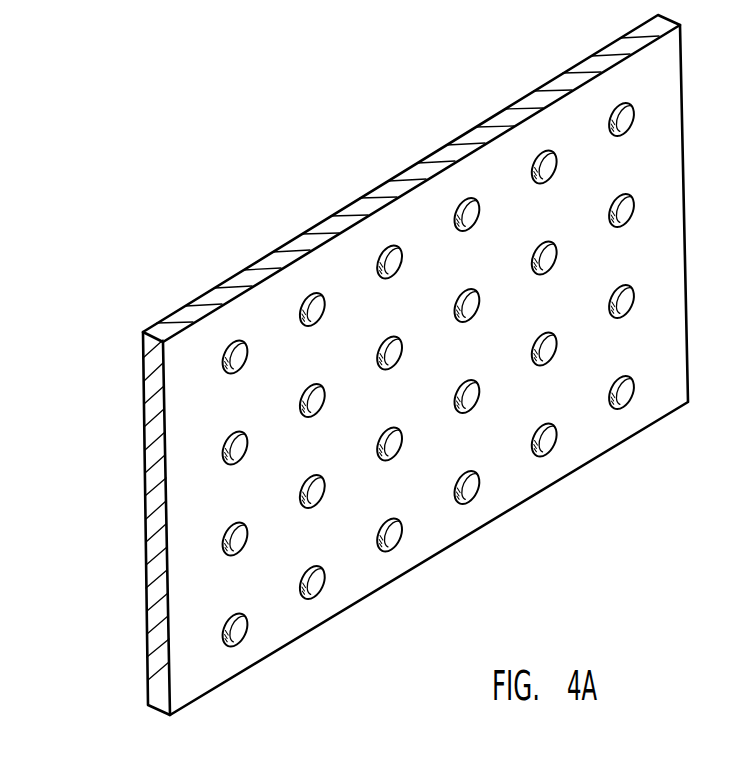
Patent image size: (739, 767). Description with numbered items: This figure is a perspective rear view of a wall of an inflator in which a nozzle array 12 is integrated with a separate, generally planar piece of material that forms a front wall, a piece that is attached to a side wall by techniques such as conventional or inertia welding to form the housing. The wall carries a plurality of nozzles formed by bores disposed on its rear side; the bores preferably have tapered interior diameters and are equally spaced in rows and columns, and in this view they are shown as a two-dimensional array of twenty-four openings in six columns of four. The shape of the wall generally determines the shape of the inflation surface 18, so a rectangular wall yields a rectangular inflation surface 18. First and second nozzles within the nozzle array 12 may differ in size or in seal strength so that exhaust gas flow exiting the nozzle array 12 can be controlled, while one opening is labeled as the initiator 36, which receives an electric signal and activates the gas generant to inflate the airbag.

The nozzle array 12 is at (203, 347).
The inflation surface 18 is at (600, 429).
The initiator 36 is at (243, 641).